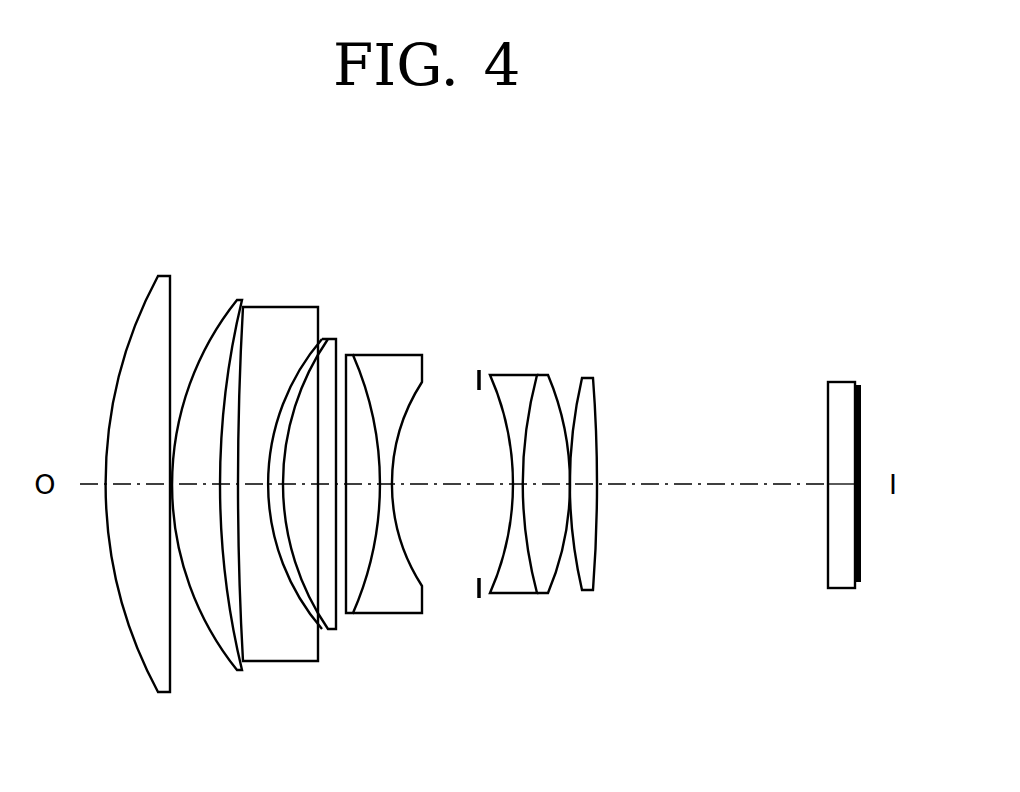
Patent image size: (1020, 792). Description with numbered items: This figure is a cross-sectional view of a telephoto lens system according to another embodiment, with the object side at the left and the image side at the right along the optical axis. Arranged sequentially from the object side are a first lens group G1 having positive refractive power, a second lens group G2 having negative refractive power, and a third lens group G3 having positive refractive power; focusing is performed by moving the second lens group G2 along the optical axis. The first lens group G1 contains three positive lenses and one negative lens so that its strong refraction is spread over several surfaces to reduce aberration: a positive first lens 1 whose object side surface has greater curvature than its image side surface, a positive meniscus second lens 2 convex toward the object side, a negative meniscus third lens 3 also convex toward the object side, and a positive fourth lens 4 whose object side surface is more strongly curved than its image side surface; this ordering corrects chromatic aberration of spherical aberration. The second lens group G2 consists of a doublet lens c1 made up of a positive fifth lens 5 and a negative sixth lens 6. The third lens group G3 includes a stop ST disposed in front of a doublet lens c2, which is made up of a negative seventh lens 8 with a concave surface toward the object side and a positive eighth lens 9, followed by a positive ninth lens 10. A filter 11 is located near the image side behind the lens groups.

The first lens 1 is at (158, 692).
The second lens 2 is at (238, 670).
The third lens 3 is at (300, 661).
The fourth lens 4 is at (327, 629).
The fifth lens 5 is at (349, 613).
The sixth lens 6 is at (412, 613).
The seventh lens 8 is at (508, 593).
The eighth lens 9 is at (540, 593).
The ninth lens 10 is at (588, 590).
The filter 11 is at (842, 588).
The stop ST is at (478, 375).
The first lens group G1 is at (340, 229).
The second lens group G2 is at (345, 229).
The third lens group G3 is at (488, 229).
The doublet lens c1 is at (368, 696).
The doublet lens c2 is at (503, 677).